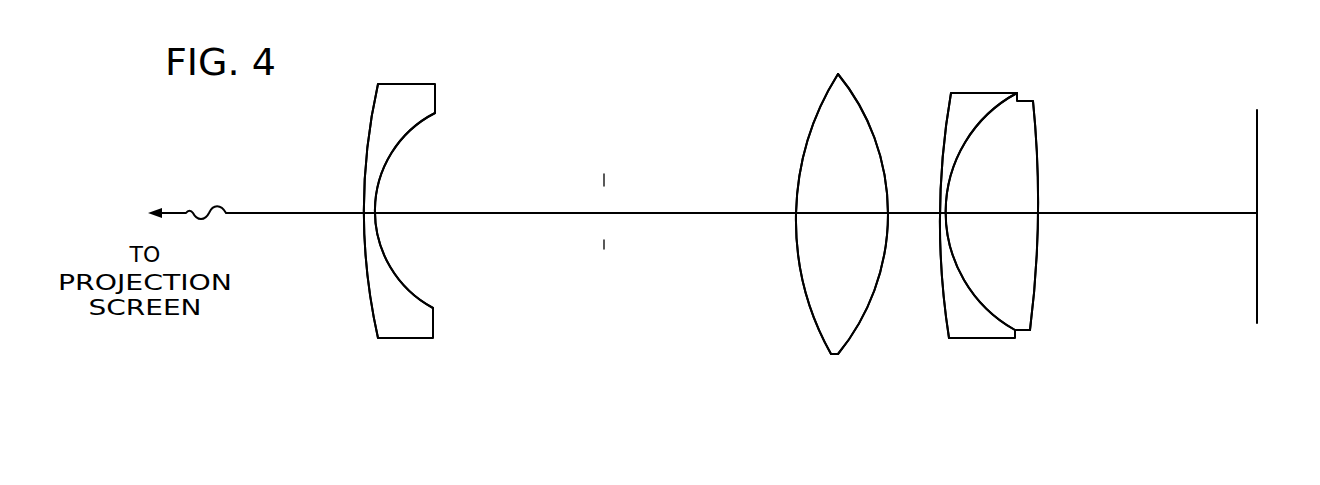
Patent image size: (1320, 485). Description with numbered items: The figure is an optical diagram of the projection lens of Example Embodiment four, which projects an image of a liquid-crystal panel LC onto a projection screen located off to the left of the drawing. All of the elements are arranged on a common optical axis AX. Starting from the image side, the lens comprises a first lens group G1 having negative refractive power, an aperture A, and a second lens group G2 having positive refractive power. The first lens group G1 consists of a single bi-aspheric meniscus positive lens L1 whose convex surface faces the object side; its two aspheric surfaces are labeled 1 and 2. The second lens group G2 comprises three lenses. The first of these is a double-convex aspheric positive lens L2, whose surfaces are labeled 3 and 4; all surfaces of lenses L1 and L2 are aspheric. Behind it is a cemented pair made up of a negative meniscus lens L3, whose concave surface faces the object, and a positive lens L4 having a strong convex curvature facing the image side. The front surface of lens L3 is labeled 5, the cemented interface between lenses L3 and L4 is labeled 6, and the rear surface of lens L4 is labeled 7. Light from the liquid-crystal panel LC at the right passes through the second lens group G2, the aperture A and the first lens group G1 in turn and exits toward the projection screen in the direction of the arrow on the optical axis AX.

The meniscus aspheric positive lens L1 is at (403, 84).
The double-convex aspheric positive lens L2 is at (838, 74).
The negative meniscus lens L3 is at (990, 93).
The positive lens L4 is at (1025, 101).
The first surface of lens L1 1 is at (366, 286).
The second surface of lens L1 2 is at (428, 214).
The third surface (front surface of lens L2) 3 is at (810, 308).
The fourth surface (rear surface of lens L2) 4 is at (862, 323).
The fifth surface (front surface of lens L3) 5 is at (944, 306).
The sixth surface (cemented surface between L3 and L4) 6 is at (992, 320).
The seventh surface (rear surface of lens L4) 7 is at (1055, 215).
The aperture A is at (604, 180).
The first lens group G1 is at (405, 214).
The second lens group G2 is at (933, 225).
The optical axis AX is at (1148, 215).
The liquid-crystal panel LC is at (1258, 128).